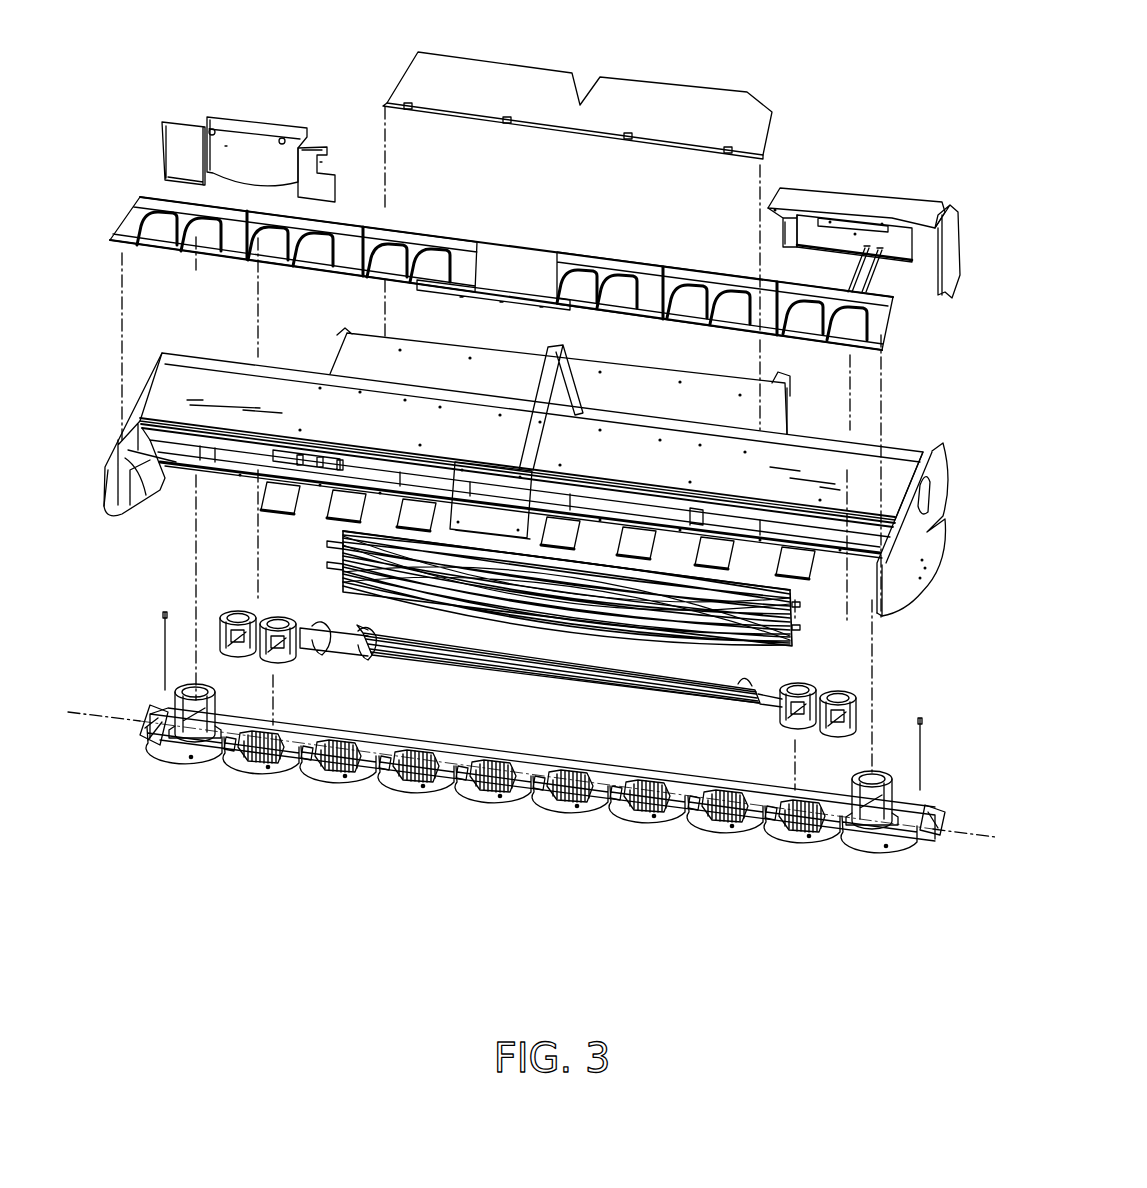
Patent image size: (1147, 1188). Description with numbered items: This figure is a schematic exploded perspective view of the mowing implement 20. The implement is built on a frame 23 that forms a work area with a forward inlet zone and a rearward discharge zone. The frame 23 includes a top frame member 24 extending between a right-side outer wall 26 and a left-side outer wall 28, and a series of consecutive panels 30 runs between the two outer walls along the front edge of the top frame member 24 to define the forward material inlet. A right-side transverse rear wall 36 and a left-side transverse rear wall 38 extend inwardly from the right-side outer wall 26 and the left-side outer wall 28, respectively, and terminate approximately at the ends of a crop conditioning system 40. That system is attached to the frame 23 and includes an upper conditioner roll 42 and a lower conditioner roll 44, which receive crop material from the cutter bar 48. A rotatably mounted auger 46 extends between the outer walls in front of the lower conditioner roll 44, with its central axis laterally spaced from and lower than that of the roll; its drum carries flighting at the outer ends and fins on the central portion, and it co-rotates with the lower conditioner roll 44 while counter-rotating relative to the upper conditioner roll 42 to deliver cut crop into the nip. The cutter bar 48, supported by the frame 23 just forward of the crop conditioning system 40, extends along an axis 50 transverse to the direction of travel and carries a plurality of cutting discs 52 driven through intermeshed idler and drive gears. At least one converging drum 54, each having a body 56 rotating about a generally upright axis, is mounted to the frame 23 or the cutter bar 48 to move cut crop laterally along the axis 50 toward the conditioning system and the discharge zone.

The mowing implement 20 is at (703, 31).
The frame 23 is at (288, 365).
The top frame member 24 is at (232, 385).
The right-side outer wall 26 is at (118, 455).
The left-side outer wall 28 is at (948, 512).
The panels 30 is at (603, 270).
The right-side transverse rear wall 36 is at (247, 128).
The left-side transverse rear wall 38 is at (840, 200).
The crop conditioning system 40 is at (818, 631).
The upper conditioner roll 42 is at (335, 545).
The lower conditioner roll 44 is at (343, 580).
The auger 46 is at (562, 672).
The cutter bar 48 is at (489, 911).
The axis 50 is at (105, 708).
The cutting discs 52 is at (200, 755).
The converging drum 54 is at (222, 627).
The body 56 is at (866, 713).